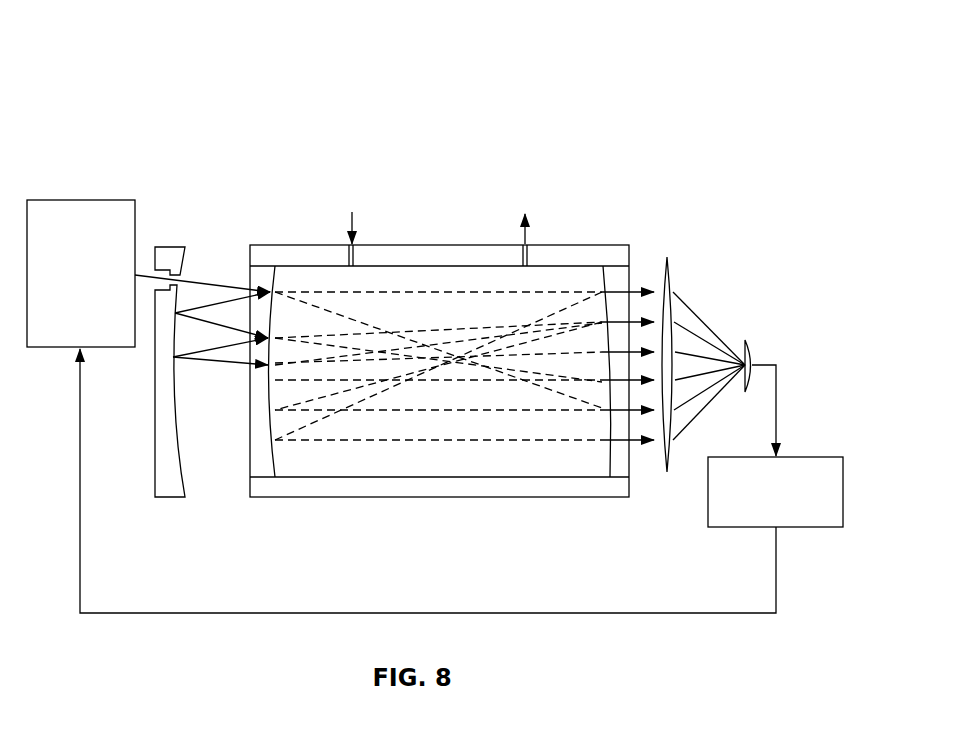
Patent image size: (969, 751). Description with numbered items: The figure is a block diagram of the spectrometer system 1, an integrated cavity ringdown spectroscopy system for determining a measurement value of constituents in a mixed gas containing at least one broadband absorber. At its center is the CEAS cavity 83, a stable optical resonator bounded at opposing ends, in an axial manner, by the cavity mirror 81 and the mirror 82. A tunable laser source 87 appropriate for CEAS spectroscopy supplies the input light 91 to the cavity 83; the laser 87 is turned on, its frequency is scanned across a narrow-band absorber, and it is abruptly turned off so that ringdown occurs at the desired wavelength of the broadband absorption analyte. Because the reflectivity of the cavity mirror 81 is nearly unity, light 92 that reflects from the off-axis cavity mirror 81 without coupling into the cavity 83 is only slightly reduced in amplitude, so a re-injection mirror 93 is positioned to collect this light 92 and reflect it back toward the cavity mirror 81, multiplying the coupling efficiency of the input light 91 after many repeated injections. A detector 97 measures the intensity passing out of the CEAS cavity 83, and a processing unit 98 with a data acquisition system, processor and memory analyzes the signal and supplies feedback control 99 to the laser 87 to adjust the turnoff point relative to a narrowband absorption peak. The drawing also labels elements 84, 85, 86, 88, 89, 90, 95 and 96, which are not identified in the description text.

The spectrometer system 1 is at (208, 76).
The cavity mirror 81 is at (265, 457).
The mirror 82 is at (615, 458).
The CEAS cavity 83 is at (413, 426).
The gas sample 84 is at (405, 281).
The gas inlet 85 is at (348, 213).
The gas outlet 86 is at (522, 223).
The tunable laser source 87 is at (80, 200).
The laser beam 88 is at (137, 274).
The output beam 89 is at (198, 276).
The optical cavity 90 is at (229, 419).
The input light 91 is at (362, 322).
The light 92 is at (218, 299).
The re-injection mirror 93 is at (155, 432).
The transmitted light beams 95 is at (632, 292).
The focusing lens 96 is at (666, 262).
The detector 97 is at (755, 354).
The processing unit 98 is at (802, 457).
The feedback control 99 is at (403, 611).